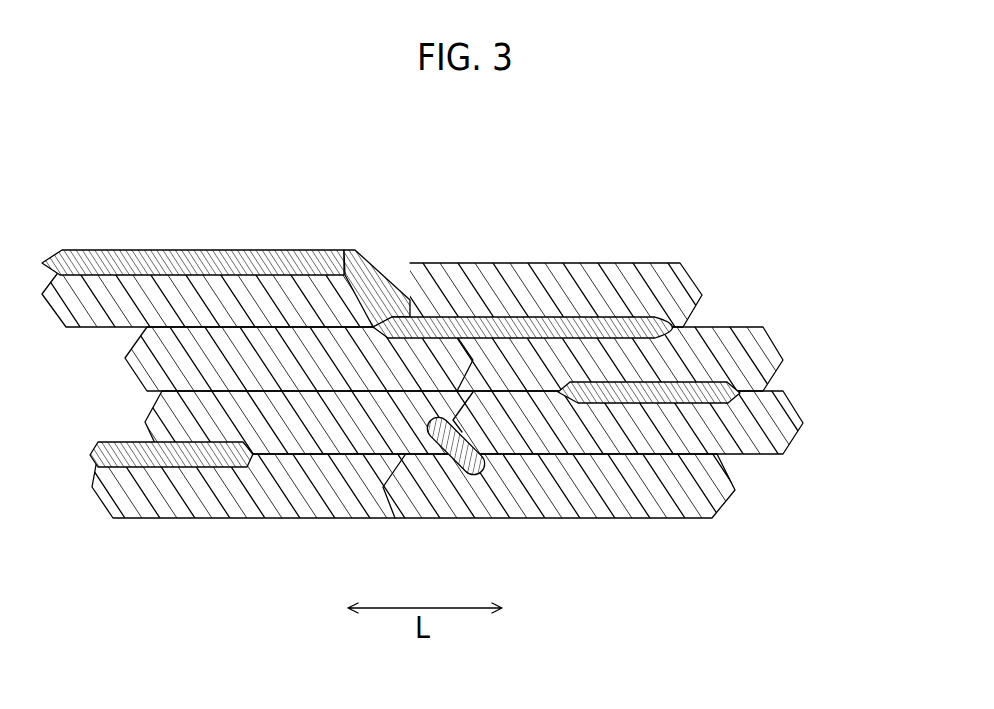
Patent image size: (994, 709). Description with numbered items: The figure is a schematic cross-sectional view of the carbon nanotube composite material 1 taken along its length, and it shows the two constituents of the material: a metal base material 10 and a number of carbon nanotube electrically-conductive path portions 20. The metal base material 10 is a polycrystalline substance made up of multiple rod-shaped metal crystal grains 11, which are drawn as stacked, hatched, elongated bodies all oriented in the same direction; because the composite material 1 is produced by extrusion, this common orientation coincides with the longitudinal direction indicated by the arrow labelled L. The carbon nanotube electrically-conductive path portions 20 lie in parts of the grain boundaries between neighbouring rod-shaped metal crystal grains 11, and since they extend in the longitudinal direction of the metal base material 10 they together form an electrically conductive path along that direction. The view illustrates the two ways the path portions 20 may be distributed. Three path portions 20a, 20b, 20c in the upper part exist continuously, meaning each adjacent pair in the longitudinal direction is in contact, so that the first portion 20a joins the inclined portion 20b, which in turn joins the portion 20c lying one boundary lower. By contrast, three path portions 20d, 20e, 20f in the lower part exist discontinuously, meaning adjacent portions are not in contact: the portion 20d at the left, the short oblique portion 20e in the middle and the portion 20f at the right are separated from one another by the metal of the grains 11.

The carbon nanotube composite material 1 is at (497, 347).
The metal base material 10 is at (497, 385).
The rod-shaped metal crystal grains 11 is at (702, 295).
The carbon nanotube electrically-conductive path portions 20 is at (434, 372).
The carbon nanotube electrically-conductive path portion 20a is at (230, 250).
The carbon nanotube electrically-conductive path portion 20b is at (372, 265).
The carbon nanotube electrically-conductive path portion 20c is at (543, 315).
The carbon nanotube electrically-conductive path portion 20d is at (173, 467).
The carbon nanotube electrically-conductive path portion 20e is at (460, 470).
The carbon nanotube electrically-conductive path portion 20f is at (700, 403).